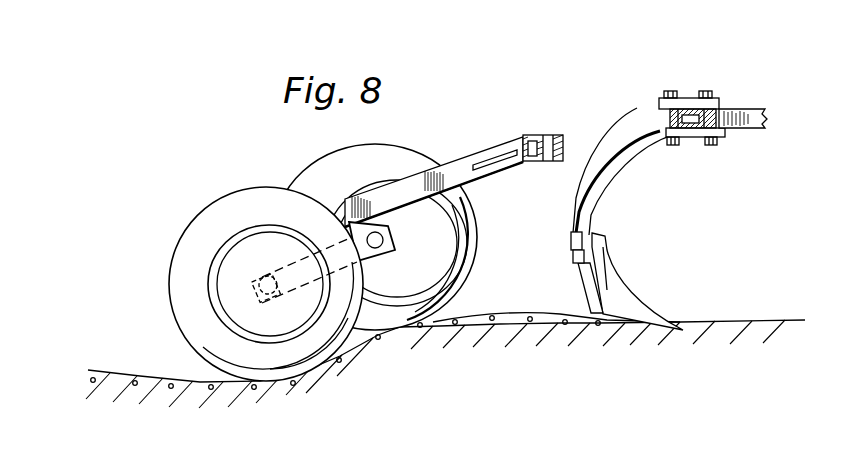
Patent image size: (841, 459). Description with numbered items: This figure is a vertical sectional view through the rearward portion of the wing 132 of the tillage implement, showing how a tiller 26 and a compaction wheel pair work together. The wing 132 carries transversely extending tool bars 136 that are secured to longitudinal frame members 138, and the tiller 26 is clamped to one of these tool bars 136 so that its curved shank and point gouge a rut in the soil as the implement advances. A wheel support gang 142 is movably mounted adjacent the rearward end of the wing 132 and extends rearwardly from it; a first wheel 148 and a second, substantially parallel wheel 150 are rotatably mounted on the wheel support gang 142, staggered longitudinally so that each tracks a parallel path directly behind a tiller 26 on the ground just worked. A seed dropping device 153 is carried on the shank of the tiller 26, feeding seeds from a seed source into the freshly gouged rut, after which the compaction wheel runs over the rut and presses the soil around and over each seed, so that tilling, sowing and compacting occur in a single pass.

The tiller 26 is at (620, 284).
The wing 132 is at (754, 104).
The tool bar 136 is at (689, 128).
The longitudinal frame member 138 is at (752, 128).
The wheel support gang 142 is at (494, 145).
The first wheel 148 is at (180, 301).
The second wheel 150 is at (465, 274).
The seed dropping device 153 is at (568, 248).